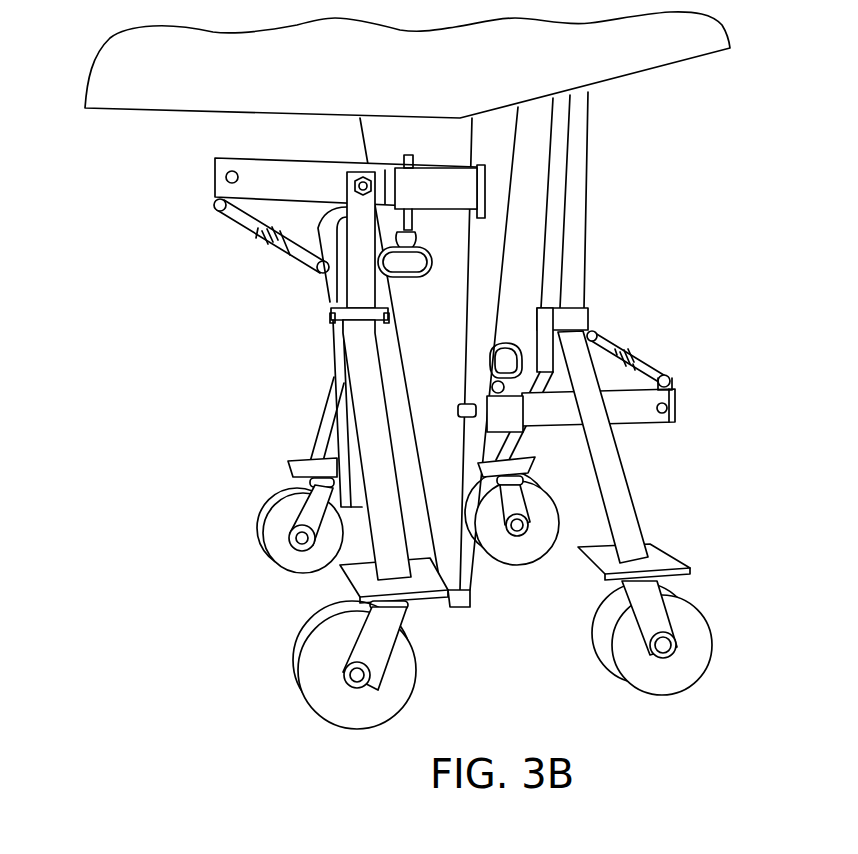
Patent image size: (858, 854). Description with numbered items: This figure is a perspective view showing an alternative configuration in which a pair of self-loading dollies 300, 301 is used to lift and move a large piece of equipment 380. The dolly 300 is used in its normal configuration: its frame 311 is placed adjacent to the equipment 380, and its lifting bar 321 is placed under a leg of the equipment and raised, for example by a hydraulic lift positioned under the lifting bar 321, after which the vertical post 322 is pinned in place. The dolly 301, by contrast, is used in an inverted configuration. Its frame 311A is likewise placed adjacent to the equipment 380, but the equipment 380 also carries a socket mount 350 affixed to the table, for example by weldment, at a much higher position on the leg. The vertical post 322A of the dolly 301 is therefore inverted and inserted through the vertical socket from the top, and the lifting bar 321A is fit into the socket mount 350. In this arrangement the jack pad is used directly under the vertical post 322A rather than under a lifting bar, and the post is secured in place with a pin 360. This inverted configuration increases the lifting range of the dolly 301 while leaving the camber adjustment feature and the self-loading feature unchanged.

The dolly 300 is at (672, 312).
The dolly 301 is at (244, 432).
The frame 311 is at (632, 518).
The frame 311A is at (385, 538).
The lifting bar 321 is at (677, 399).
The lifting bar 321A is at (220, 177).
The vertical post 322 is at (580, 150).
The vertical post 322A is at (353, 286).
The socket mount 350 is at (452, 199).
The pin 360 is at (331, 319).
The equipment 380 is at (387, 78).